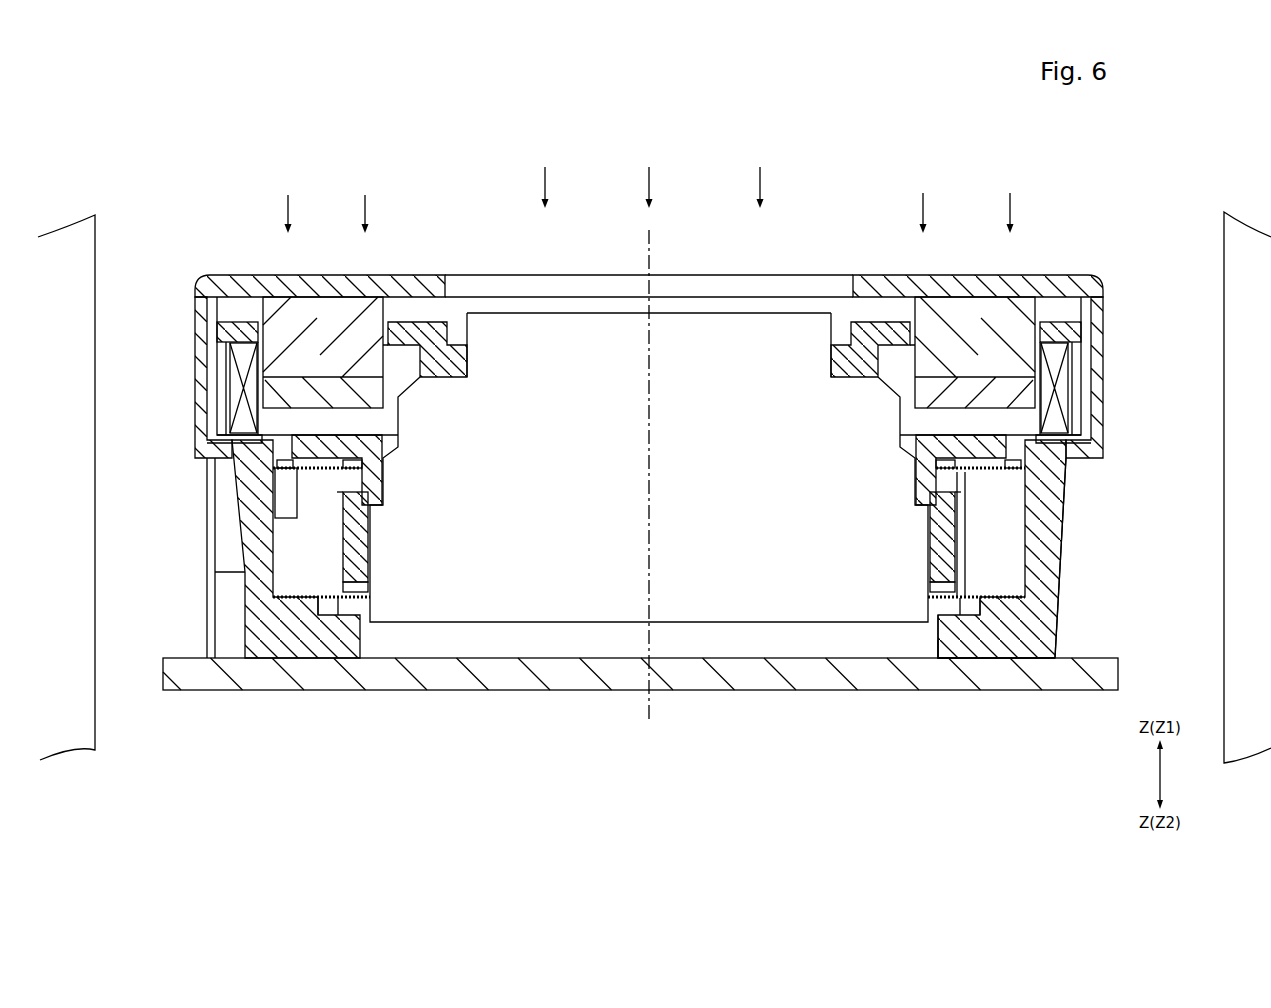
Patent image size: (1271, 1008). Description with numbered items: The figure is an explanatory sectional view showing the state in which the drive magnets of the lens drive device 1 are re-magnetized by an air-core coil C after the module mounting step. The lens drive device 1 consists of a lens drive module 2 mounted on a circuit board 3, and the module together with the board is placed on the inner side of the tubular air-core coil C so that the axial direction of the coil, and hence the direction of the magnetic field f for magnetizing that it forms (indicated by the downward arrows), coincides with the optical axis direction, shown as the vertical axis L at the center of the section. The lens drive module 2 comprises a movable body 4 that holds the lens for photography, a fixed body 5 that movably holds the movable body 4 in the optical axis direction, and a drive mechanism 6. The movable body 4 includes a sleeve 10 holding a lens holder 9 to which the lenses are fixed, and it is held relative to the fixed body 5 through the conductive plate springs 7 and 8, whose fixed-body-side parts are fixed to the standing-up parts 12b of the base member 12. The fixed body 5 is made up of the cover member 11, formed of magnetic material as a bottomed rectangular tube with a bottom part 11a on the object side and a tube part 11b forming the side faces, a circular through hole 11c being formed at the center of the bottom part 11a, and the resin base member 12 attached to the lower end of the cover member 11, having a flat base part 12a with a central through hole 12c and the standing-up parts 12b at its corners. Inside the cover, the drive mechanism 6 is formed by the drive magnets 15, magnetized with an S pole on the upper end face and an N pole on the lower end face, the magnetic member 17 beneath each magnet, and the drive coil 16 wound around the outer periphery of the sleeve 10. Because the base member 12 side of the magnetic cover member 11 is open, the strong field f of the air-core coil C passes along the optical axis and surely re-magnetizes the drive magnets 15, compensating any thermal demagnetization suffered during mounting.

The lens drive device 1 is at (869, 201).
The lens drive module 2 is at (1059, 275).
The circuit board 3 is at (1118, 676).
The movable body 4 is at (862, 322).
The fixed body 5 is at (1126, 466).
The drive mechanism 6 is at (1082, 354).
The plate spring 7 is at (977, 473).
The plate spring 8 is at (1007, 590).
The lens holder 9 is at (808, 313).
The sleeve 10 is at (862, 322).
The cover member 11 is at (1102, 447).
The bottom part 11a is at (962, 275).
The tube part 11b is at (1106, 316).
The through hole 11c is at (447, 290).
The base member 12 is at (1067, 504).
The base part 12a is at (1058, 615).
The standing-up part 12b is at (1062, 545).
The through hole 12c is at (938, 648).
The drive magnet 15 is at (257, 358).
The drive coil 16 is at (1078, 428).
The magnetic member 17 is at (257, 394).
The optical axis L is at (655, 263).
The air-core coil C is at (1224, 238).
The magnetic field for magnetizing f is at (1010, 207).